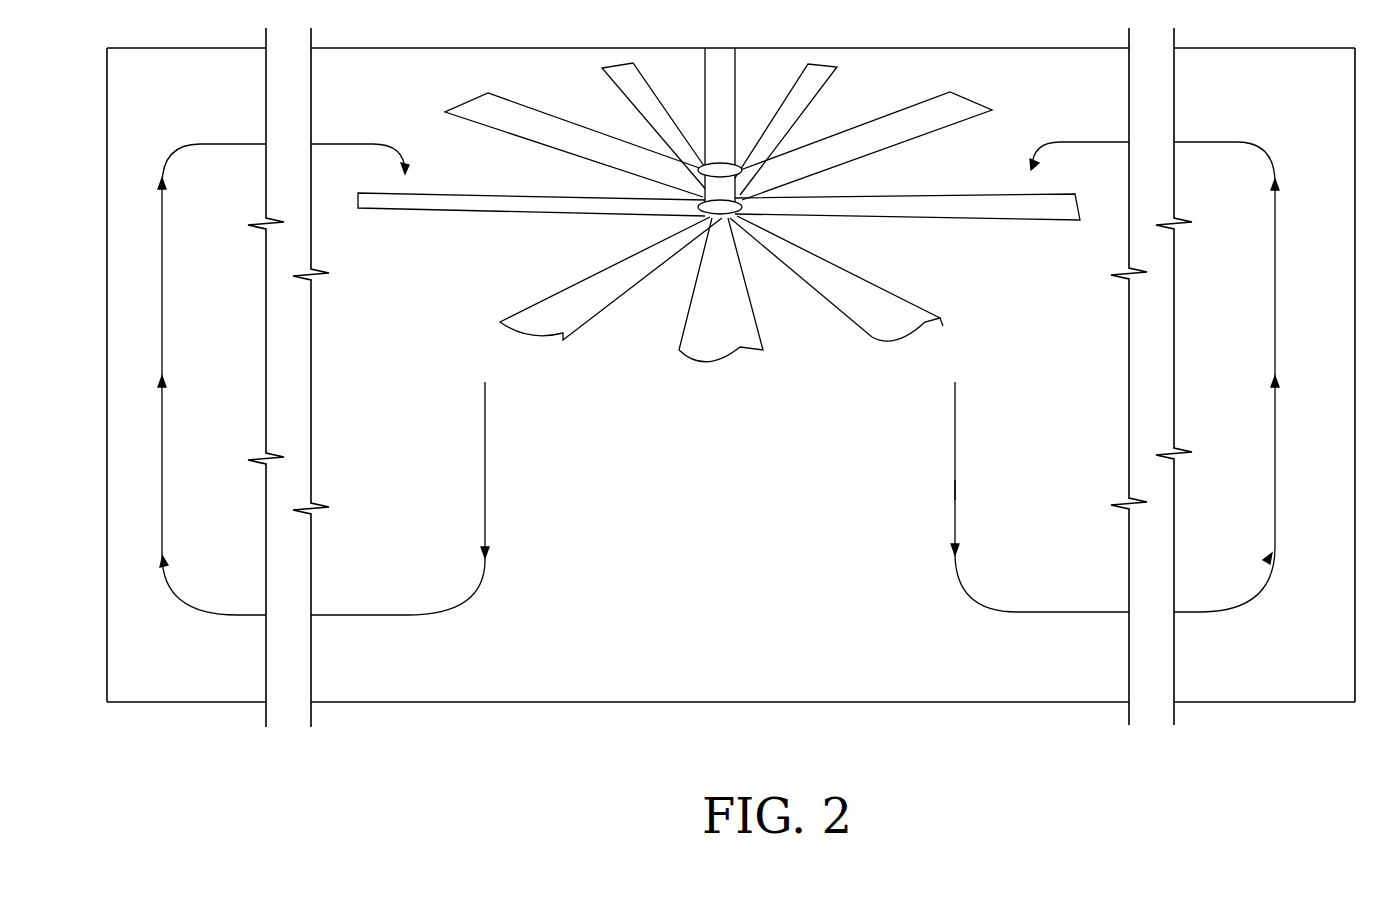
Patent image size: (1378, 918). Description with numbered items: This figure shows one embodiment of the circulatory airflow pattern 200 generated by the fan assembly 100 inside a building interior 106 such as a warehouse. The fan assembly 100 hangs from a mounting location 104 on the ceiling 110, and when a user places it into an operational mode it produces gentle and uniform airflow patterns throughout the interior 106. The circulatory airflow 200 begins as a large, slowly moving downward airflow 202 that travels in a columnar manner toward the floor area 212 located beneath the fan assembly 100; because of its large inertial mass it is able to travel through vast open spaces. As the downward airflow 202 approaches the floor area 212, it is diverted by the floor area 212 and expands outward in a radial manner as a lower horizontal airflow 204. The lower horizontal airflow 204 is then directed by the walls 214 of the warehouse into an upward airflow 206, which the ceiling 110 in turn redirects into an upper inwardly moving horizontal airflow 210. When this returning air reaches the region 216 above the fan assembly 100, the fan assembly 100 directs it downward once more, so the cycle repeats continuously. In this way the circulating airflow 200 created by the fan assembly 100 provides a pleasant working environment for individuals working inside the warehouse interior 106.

The fan assembly 100 is at (500, 340).
The mounting location 104 is at (722, 48).
The building interior 106 is at (722, 584).
The ceiling 110 is at (992, 48).
The airflow pattern 200 is at (973, 478).
The downward airflow 202 is at (955, 420).
The lower horizontal airflow 204 is at (982, 595).
The upward airflow 206 is at (1275, 420).
The upper inwardly moving horizontal airflow 210 is at (1255, 147).
The floor area 212 is at (765, 700).
The walls 214 is at (1355, 335).
The region above the fan assembly 216 is at (1063, 93).